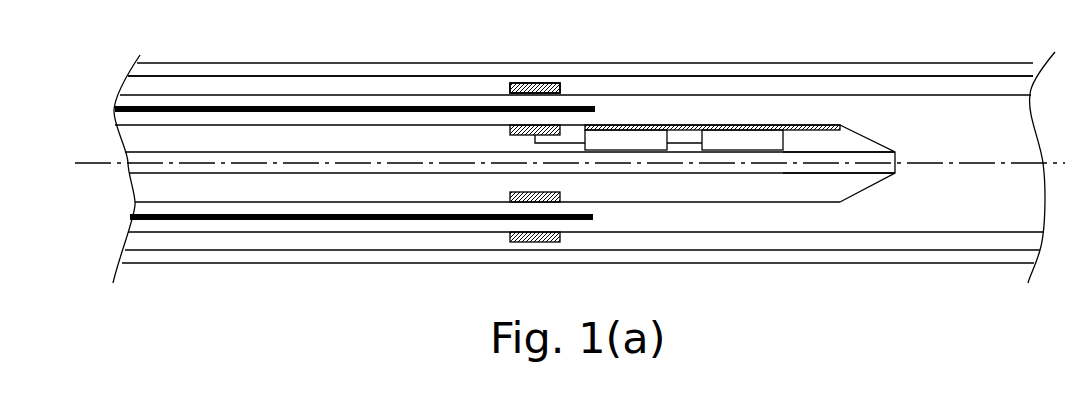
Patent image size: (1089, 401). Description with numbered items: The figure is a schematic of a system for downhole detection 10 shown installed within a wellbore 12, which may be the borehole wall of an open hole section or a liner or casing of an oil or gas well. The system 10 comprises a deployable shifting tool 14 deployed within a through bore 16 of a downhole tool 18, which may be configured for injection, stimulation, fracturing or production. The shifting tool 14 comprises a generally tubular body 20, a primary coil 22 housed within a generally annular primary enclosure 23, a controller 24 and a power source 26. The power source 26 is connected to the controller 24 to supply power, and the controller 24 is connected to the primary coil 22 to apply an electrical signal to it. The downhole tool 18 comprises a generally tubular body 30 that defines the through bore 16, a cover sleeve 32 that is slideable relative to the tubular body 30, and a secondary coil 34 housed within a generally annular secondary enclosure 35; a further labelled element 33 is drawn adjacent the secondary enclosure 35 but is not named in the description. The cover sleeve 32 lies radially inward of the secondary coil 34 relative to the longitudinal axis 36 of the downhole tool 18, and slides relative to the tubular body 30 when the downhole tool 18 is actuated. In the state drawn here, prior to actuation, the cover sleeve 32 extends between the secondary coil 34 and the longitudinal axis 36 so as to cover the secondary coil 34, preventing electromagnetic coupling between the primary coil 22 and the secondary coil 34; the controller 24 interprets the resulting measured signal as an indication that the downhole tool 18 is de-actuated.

The system for downhole detection 10 is at (410, 272).
The wellbore 12 is at (208, 257).
The shifting tool 14 is at (812, 112).
The through bore 16 is at (970, 112).
The downhole tool 18 is at (275, 85).
The tubular body 20 is at (803, 190).
The primary coil 22 is at (562, 105).
The primary enclosure 23 is at (548, 130).
The controller 24 is at (657, 135).
The power source 26 is at (747, 135).
The tubular body 30 is at (318, 80).
The cover sleeve 32 is at (372, 107).
The bonding pad 33 is at (540, 82).
The secondary coil 34 is at (520, 83).
The secondary enclosure 35 is at (507, 88).
The longitudinal axis 36 is at (88, 160).